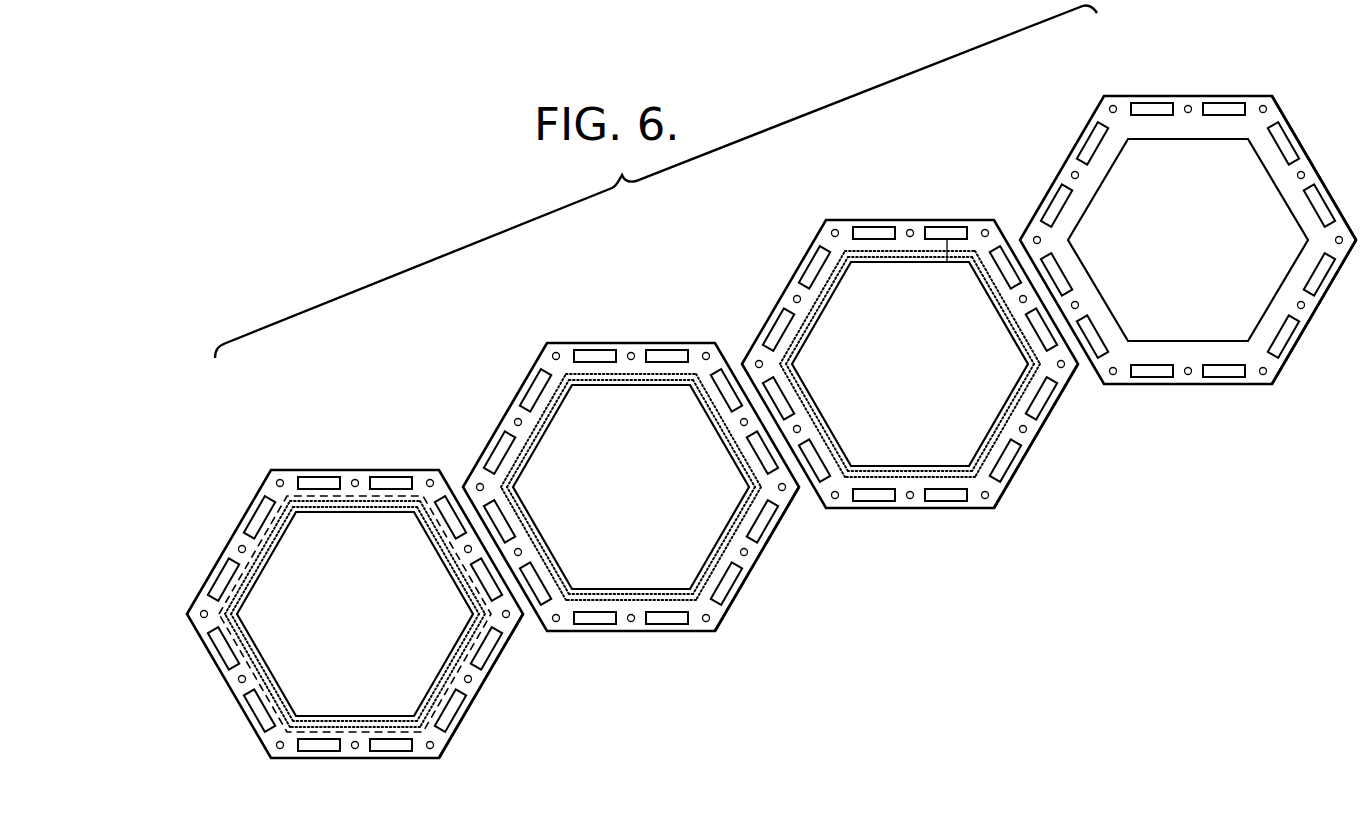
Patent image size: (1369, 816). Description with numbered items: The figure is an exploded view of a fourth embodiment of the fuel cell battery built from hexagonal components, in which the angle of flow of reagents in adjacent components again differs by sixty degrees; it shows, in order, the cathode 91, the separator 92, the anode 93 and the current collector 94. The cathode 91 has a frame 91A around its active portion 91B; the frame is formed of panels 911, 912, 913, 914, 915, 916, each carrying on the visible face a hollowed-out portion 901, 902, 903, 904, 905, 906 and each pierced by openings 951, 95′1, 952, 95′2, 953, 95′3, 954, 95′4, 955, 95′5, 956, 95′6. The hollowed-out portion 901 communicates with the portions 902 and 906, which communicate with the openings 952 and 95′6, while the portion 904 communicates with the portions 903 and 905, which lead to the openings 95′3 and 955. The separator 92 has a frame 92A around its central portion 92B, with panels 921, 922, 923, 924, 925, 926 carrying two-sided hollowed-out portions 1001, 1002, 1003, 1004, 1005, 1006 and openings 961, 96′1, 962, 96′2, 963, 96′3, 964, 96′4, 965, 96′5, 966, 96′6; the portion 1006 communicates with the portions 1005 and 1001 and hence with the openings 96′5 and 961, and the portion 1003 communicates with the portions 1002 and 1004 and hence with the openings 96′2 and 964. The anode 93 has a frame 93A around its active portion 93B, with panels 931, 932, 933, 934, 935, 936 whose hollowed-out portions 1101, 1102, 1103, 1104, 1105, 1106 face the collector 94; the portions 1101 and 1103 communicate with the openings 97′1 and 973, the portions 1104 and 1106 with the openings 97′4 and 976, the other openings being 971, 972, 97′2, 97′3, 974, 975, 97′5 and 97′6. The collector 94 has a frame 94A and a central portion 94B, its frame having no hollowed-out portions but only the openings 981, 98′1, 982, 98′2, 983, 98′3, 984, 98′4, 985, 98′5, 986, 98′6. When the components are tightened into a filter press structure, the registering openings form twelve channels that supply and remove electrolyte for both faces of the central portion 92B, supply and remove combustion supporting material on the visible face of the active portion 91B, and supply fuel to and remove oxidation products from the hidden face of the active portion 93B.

The cathode 91 is at (229, 533).
The frame 91A is at (288, 464).
The active portion 91B is at (448, 735).
The panel 911 is at (357, 479).
The panel 912 is at (465, 553).
The panel 913 is at (474, 682).
The panel 914 is at (357, 739).
The panel 915 is at (246, 672).
The panel 916 is at (250, 555).
The opening 951 is at (320, 477).
The opening 95′1 is at (393, 477).
The opening 952 is at (444, 522).
The opening 95′2 is at (480, 585).
The opening 953 is at (490, 652).
The opening 95′3 is at (458, 710).
The opening 954 is at (392, 738).
The opening 95′4 is at (320, 738).
The opening 955 is at (260, 704).
The opening 95′5 is at (232, 643).
The opening 956 is at (222, 578).
The opening 95′6 is at (265, 510).
The hollowed-out portion 901 is at (354, 505).
The hollowed-out portion 902 is at (458, 545).
The hollowed-out portion 903 is at (455, 675).
The hollowed-out portion 904 is at (380, 712).
The hollowed-out portion 905 is at (285, 688).
The hollowed-out portion 906 is at (283, 540).
The separator 92 is at (501, 408).
The frame 92A is at (560, 339).
The central portion 92B is at (722, 626).
The panel 921 is at (632, 350).
The panel 922 is at (740, 425).
The panel 923 is at (750, 556).
The panel 924 is at (632, 626).
The panel 925 is at (523, 550).
The panel 926 is at (522, 426).
The opening 961 is at (595, 350).
The opening 96′1 is at (668, 350).
The opening 962 is at (722, 392).
The opening 96′2 is at (758, 454).
The opening 963 is at (767, 522).
The opening 96′3 is at (733, 586).
The opening 964 is at (670, 626).
The opening 96′4 is at (596, 625).
The opening 965 is at (540, 582).
The opening 96′5 is at (504, 519).
The opening 966 is at (498, 452).
The opening 96′6 is at (535, 388).
The hollowed-out portion 1001 is at (622, 386).
The hollowed-out portion 1002 is at (738, 470).
The hollowed-out portion 1003 is at (726, 545).
The hollowed-out portion 1004 is at (646, 582).
The hollowed-out portion 1005 is at (548, 515).
The hollowed-out portion 1006 is at (556, 397).
The anode 93 is at (782, 284).
The frame 93A is at (830, 213).
The active portion 93B is at (998, 500).
The panel 931 is at (911, 227).
The panel 932 is at (1019, 302).
The panel 933 is at (1028, 435).
The panel 934 is at (911, 502).
The panel 935 is at (803, 420).
The panel 936 is at (805, 302).
The opening 971 is at (875, 226).
The opening 97′1 is at (948, 226).
The opening 972 is at (1002, 270).
The opening 97′2 is at (1038, 331).
The opening 973 is at (1046, 400).
The opening 97′3 is at (1010, 464).
The opening 974 is at (950, 503).
The opening 97′4 is at (875, 502).
The opening 975 is at (820, 458).
The opening 97′5 is at (784, 396).
The opening 976 is at (776, 330).
The opening 97′6 is at (813, 264).
The hollowed-out portion 1101 is at (925, 264).
The hollowed-out portion 1102 is at (1018, 345).
The hollowed-out portion 1103 is at (1012, 410).
The hollowed-out portion 1104 is at (917, 460).
The hollowed-out portion 1105 is at (826, 424).
The hollowed-out portion 1106 is at (808, 330).
The current collector 94 is at (1049, 172).
The frame 94A is at (1310, 150).
The central portion 94B is at (1280, 378).
The opening 981 is at (1153, 116).
The opening 98′1 is at (1226, 116).
The opening 982 is at (1282, 150).
The opening 98′2 is at (1315, 207).
The opening 983 is at (1312, 274).
The opening 98′3 is at (1280, 332).
The opening 984 is at (1226, 378).
The opening 98′4 is at (1153, 378).
The opening 985 is at (1097, 332).
The opening 98′5 is at (1065, 272).
The opening 986 is at (1052, 206).
The opening 98′6 is at (1090, 140).